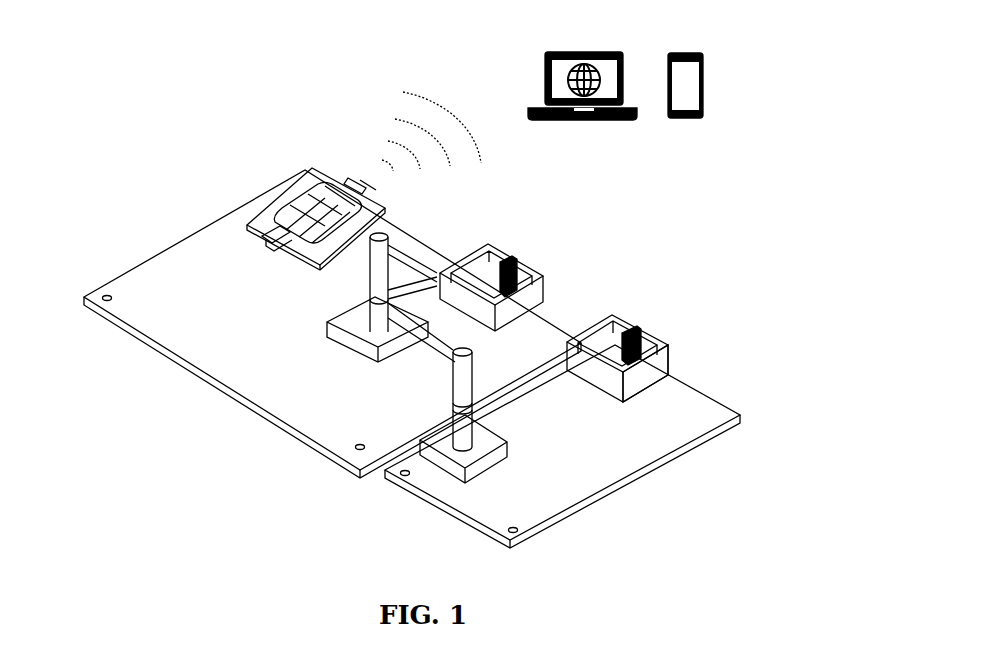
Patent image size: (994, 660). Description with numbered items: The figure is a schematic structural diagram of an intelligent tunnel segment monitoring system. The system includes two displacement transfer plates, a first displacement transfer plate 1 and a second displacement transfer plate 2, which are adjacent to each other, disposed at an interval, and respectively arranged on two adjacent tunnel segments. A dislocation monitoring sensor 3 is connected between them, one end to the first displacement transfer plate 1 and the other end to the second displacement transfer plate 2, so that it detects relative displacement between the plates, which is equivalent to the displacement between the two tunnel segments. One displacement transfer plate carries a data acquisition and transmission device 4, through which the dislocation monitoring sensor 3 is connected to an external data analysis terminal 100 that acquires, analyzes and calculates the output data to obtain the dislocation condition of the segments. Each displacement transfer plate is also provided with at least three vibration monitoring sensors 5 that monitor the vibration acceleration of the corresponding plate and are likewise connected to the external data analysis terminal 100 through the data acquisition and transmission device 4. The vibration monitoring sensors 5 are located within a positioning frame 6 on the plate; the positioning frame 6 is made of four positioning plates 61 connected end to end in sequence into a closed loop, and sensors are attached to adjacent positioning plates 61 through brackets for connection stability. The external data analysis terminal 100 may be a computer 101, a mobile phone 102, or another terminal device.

The first displacement transfer plate 1 is at (207, 272).
The second displacement transfer plate 2 is at (598, 474).
The dislocation monitoring sensor 3 is at (440, 363).
The data acquisition and transmission device 4 is at (270, 213).
The vibration monitoring sensor 5 is at (630, 330).
The positioning frame 6 is at (537, 262).
The positioning plate 61 is at (653, 367).
The external data analysis terminal 100 is at (682, 201).
The computer 101 is at (590, 113).
The mobile phone 102 is at (688, 117).